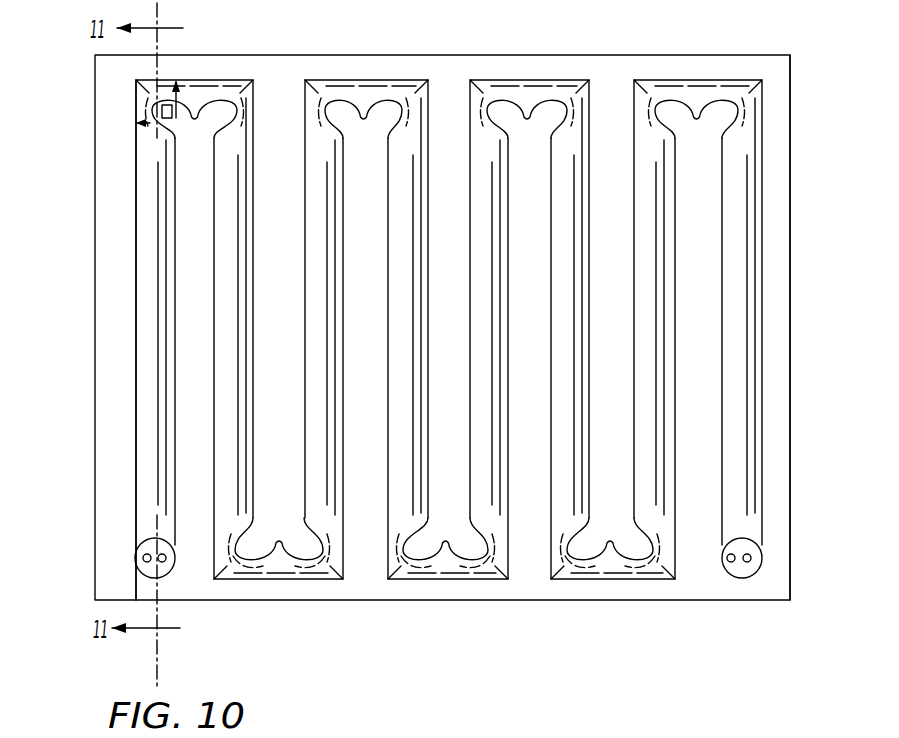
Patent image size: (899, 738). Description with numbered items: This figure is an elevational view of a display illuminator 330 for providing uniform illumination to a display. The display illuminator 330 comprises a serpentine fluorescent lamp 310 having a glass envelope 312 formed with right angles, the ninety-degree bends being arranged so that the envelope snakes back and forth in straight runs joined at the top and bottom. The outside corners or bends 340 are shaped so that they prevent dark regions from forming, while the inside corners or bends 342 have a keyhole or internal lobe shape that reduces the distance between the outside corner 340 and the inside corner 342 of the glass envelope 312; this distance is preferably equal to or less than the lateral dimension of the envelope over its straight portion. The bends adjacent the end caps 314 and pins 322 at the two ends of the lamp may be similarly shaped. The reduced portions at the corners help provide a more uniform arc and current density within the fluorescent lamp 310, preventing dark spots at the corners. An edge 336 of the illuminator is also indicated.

The serpentine fluorescent lamp 310 is at (120, 477).
The glass envelope 312 is at (238, 363).
The end cap 314 is at (141, 544).
The pin 322 is at (162, 562).
The display illuminator 330 is at (580, 50).
The side edge 336 is at (792, 338).
The outside corner 340 is at (314, 84).
The inside corner 342 is at (183, 110).